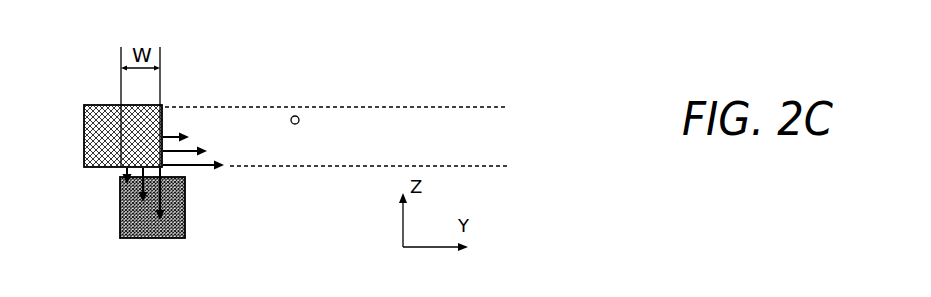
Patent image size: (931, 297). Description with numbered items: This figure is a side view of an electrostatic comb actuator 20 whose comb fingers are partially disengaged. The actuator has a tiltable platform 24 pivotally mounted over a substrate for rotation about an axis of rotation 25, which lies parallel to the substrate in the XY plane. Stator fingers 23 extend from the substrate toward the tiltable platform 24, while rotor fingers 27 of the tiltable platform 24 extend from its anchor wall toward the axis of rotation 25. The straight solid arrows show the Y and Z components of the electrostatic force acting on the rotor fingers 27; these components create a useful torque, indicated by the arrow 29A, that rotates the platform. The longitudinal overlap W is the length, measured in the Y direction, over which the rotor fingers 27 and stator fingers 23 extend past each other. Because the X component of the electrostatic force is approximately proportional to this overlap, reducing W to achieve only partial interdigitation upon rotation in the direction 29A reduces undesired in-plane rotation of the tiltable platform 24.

The electrostatic comb actuator 20 is at (459, 60).
The stator fingers 23 is at (185, 207).
The tiltable platform 24 is at (482, 158).
The axis of rotation 25 is at (296, 124).
The rotor fingers 27 is at (88, 105).
The arrow indicating torque 29A is at (315, 98).